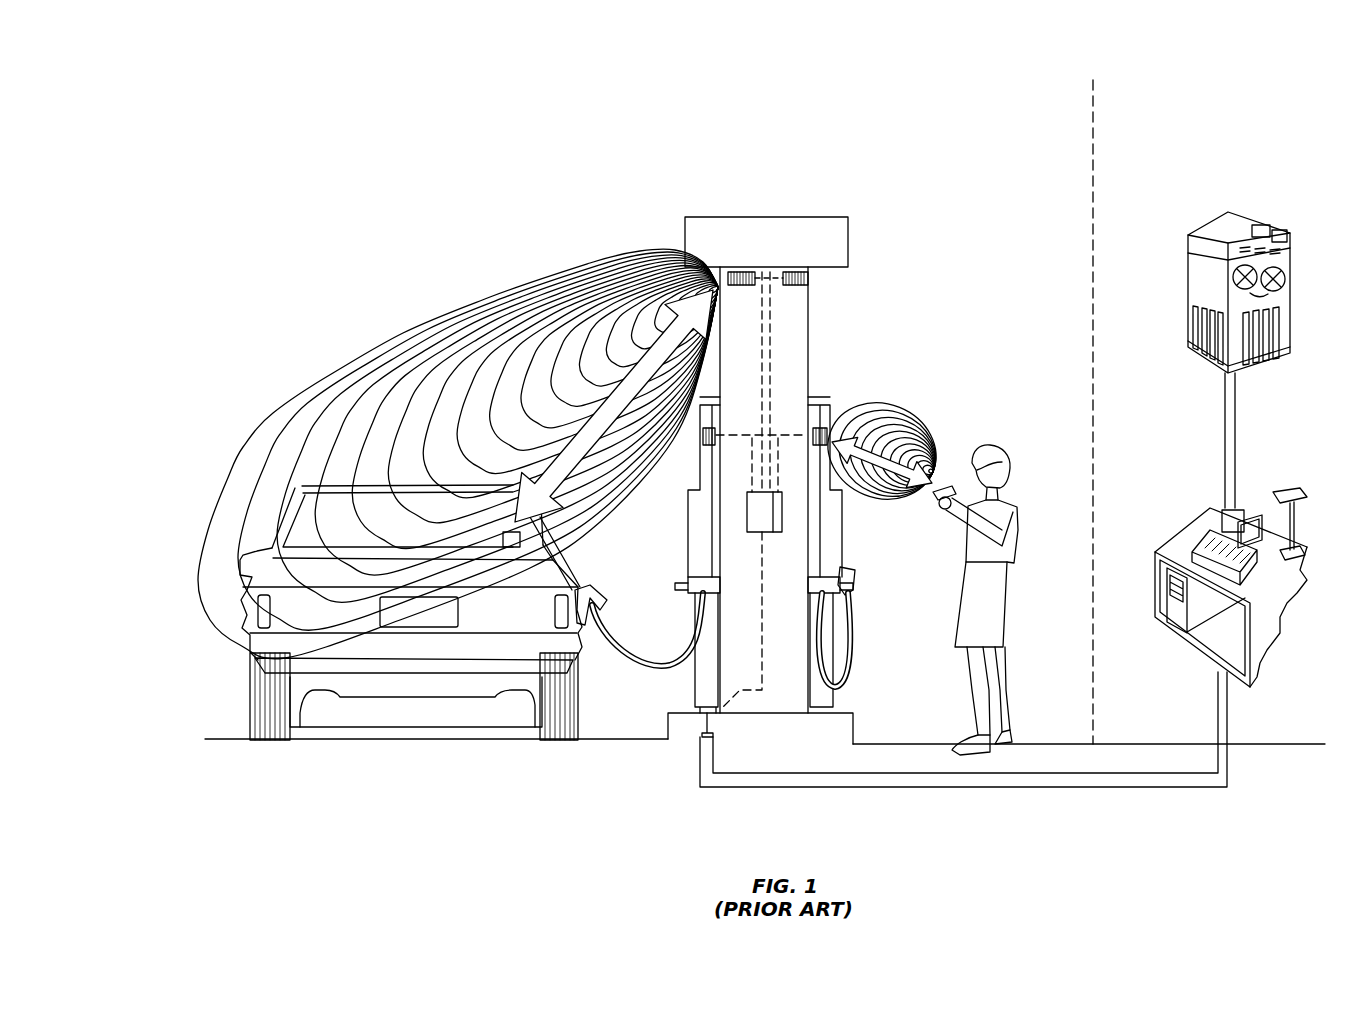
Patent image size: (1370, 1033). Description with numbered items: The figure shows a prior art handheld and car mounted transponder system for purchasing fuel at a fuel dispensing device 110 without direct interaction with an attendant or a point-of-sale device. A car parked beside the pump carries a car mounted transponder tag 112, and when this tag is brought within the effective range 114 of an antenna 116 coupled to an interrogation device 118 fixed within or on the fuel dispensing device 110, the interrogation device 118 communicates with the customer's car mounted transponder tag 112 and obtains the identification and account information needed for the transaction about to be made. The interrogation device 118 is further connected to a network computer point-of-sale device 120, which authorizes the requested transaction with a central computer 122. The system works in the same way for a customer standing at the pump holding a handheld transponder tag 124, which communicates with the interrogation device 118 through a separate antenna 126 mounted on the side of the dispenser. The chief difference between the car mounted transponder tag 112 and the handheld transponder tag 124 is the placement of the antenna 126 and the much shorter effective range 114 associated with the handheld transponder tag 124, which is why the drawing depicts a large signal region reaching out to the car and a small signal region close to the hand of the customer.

The fuel dispensing device 110 is at (778, 216).
The car mounted transponder tag 112 is at (528, 548).
The effective range 114 is at (525, 298).
The antenna 116 is at (740, 272).
The interrogation device 118 is at (773, 510).
The network computer point-of-sale (POS) device 120 is at (1192, 520).
The central computer 122 is at (1188, 262).
The handheld transponder tag 124 is at (938, 500).
The antenna 126 is at (705, 445).